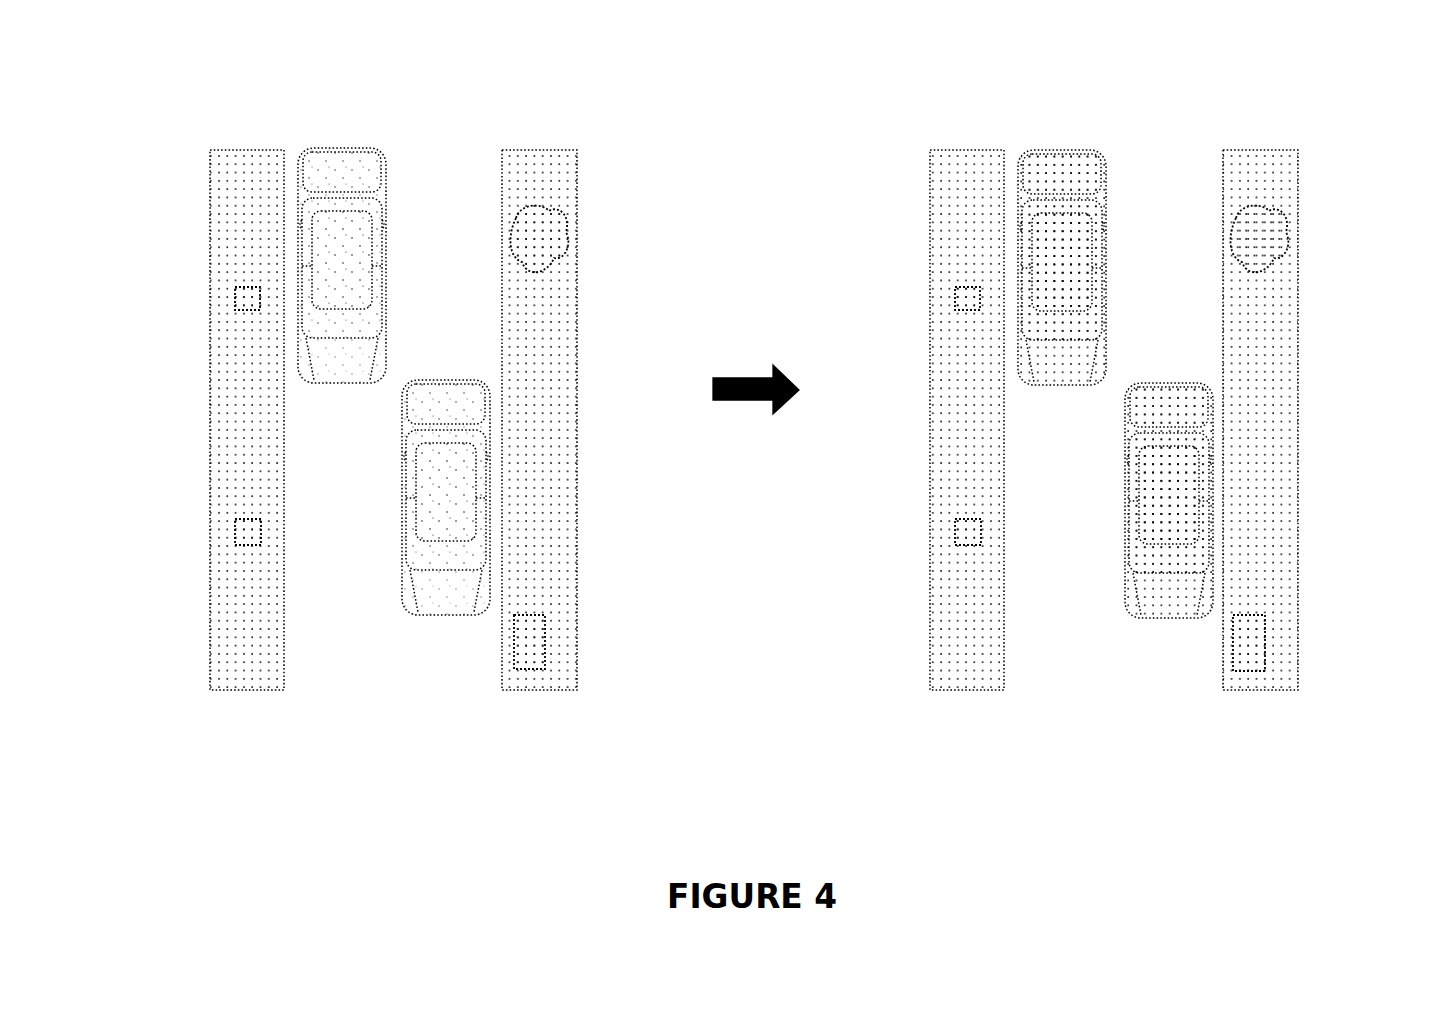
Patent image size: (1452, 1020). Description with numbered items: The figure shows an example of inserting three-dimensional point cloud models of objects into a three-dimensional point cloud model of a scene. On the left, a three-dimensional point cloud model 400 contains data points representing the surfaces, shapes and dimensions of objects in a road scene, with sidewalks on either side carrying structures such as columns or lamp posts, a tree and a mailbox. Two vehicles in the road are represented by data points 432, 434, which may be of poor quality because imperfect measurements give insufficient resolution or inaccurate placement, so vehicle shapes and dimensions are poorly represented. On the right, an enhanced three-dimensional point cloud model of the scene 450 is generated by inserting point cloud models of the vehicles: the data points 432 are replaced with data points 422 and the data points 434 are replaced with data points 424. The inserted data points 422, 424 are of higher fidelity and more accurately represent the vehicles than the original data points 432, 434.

The three-dimensional point cloud model 400 is at (396, 98).
The enhanced three-dimensional point cloud model of the scene 450 is at (1104, 79).
The data points 432 is at (323, 384).
The data points 434 is at (472, 379).
The data points 422 is at (1046, 386).
The data points 424 is at (1195, 382).